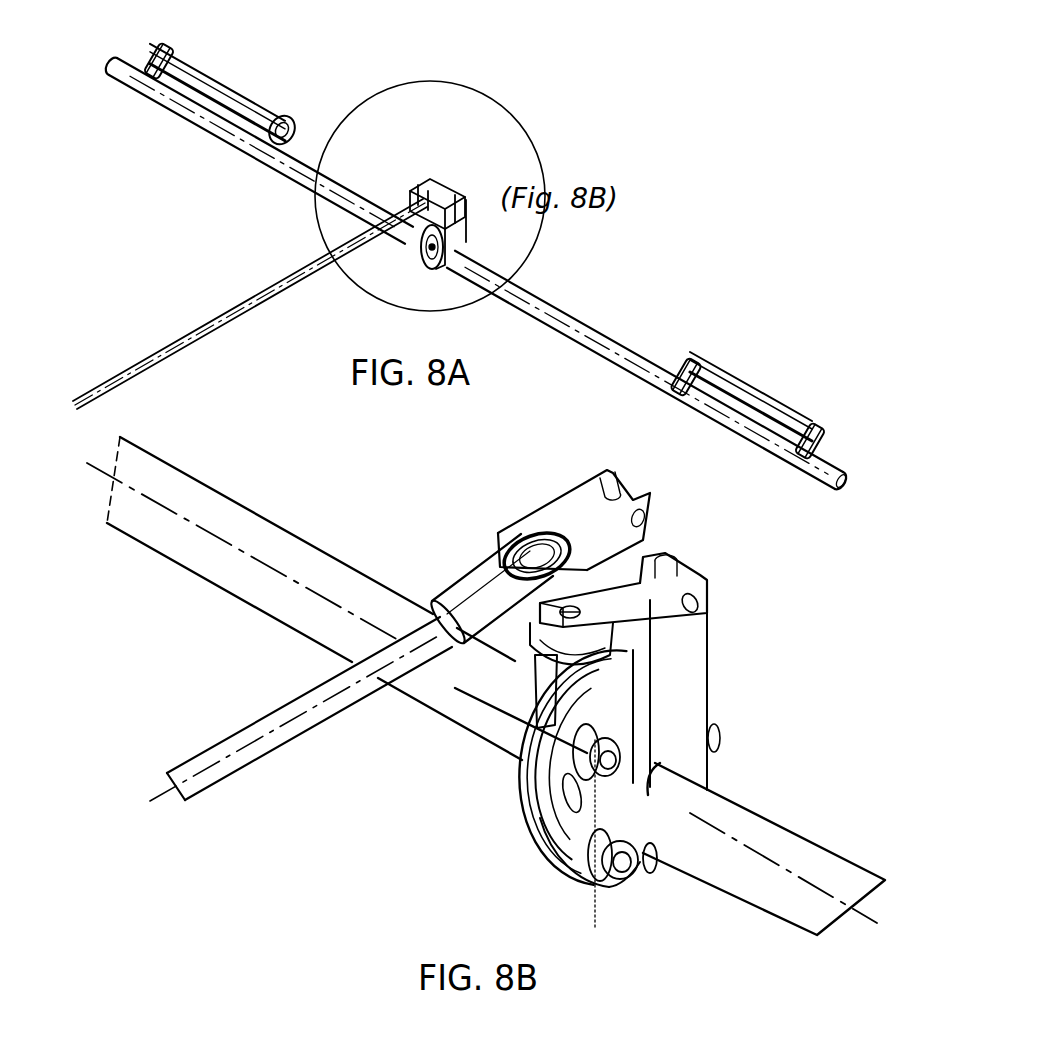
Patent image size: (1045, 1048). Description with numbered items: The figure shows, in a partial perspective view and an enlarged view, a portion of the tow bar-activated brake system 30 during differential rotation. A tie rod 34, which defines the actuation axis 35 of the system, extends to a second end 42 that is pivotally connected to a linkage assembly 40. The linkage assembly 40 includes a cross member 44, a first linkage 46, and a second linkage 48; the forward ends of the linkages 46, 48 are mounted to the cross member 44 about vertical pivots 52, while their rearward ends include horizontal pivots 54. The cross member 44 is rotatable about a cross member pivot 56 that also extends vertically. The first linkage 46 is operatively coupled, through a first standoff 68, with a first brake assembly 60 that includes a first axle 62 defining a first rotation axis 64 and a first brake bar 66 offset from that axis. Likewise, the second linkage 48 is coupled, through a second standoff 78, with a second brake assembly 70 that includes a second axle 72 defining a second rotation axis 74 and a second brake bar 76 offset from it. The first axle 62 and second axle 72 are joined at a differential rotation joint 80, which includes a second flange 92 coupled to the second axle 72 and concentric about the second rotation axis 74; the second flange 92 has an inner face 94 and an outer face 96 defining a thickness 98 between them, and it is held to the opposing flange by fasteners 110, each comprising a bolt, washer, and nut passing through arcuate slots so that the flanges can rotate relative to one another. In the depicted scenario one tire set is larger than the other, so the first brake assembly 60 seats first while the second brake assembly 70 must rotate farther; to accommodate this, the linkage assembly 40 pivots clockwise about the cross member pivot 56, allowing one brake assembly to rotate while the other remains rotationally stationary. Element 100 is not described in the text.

In FIG. 8B, the tow bar-activated brake system 30 is at (488, 703).
In FIG. 8A, the tie rod 34 is at (197, 330).
In FIG. 8B, the tie rod 34 is at (274, 721).
In FIG. 8B, the actuation axis 35 is at (165, 787).
In FIG. 8A, the linkage assembly 40 is at (388, 214).
In FIG. 8B, the linkage assembly 40 is at (561, 591).
In FIG. 8B, the second end of the tie rod 42 is at (457, 590).
In FIG. 8B, the cross member 44 is at (520, 615).
In FIG. 8B, the first linkage 46 is at (563, 490).
In FIG. 8B, the second linkage 48 is at (657, 590).
In FIG. 8B, the vertical pivots 52 is at (567, 608).
In FIG. 8B, the horizontal pivots 54 is at (695, 578).
In FIG. 8B, the cross member pivot 56 is at (497, 543).
In FIG. 8A, the first brake assembly 60 is at (259, 139).
In FIG. 8B, the first brake assembly 60 is at (323, 590).
In FIG. 8A, the first axle 62 is at (203, 121).
In FIG. 8B, the first axle 62 is at (203, 580).
In FIG. 8A, the first rotation axis 64 is at (300, 162).
In FIG. 8B, the first rotation axis 64 is at (110, 503).
In FIG. 8A, the first brake bar 66 is at (203, 80).
In FIG. 8B, the first standoff 68 is at (543, 693).
In FIG. 8A, the second brake assembly 70 is at (647, 357).
In FIG. 8B, the second brake assembly 70 is at (780, 879).
In FIG. 8A, the second axle 72 is at (633, 342).
In FIG. 8B, the second axle 72 is at (797, 827).
In FIG. 8A, the second rotation axis 74 is at (580, 327).
In FIG. 8B, the second rotation axis 74 is at (867, 913).
In FIG. 8A, the second brake bar 76 is at (753, 407).
In FIG. 8B, the second standoff 78 is at (693, 720).
In FIG. 8A, the differential rotation joint 80 is at (412, 266).
In FIG. 8B, the differential rotation joint 80 is at (655, 862).
In FIG. 8B, the second flange 92 is at (517, 773).
In FIG. 8B, the inner face 94 is at (520, 797).
In FIG. 8B, the outer face 96 is at (580, 870).
In FIG. 8B, the thickness 98 is at (537, 853).
In FIG. 8B, the rim groove 100 is at (563, 803).
In FIG. 8B, the fasteners 110 is at (612, 875).